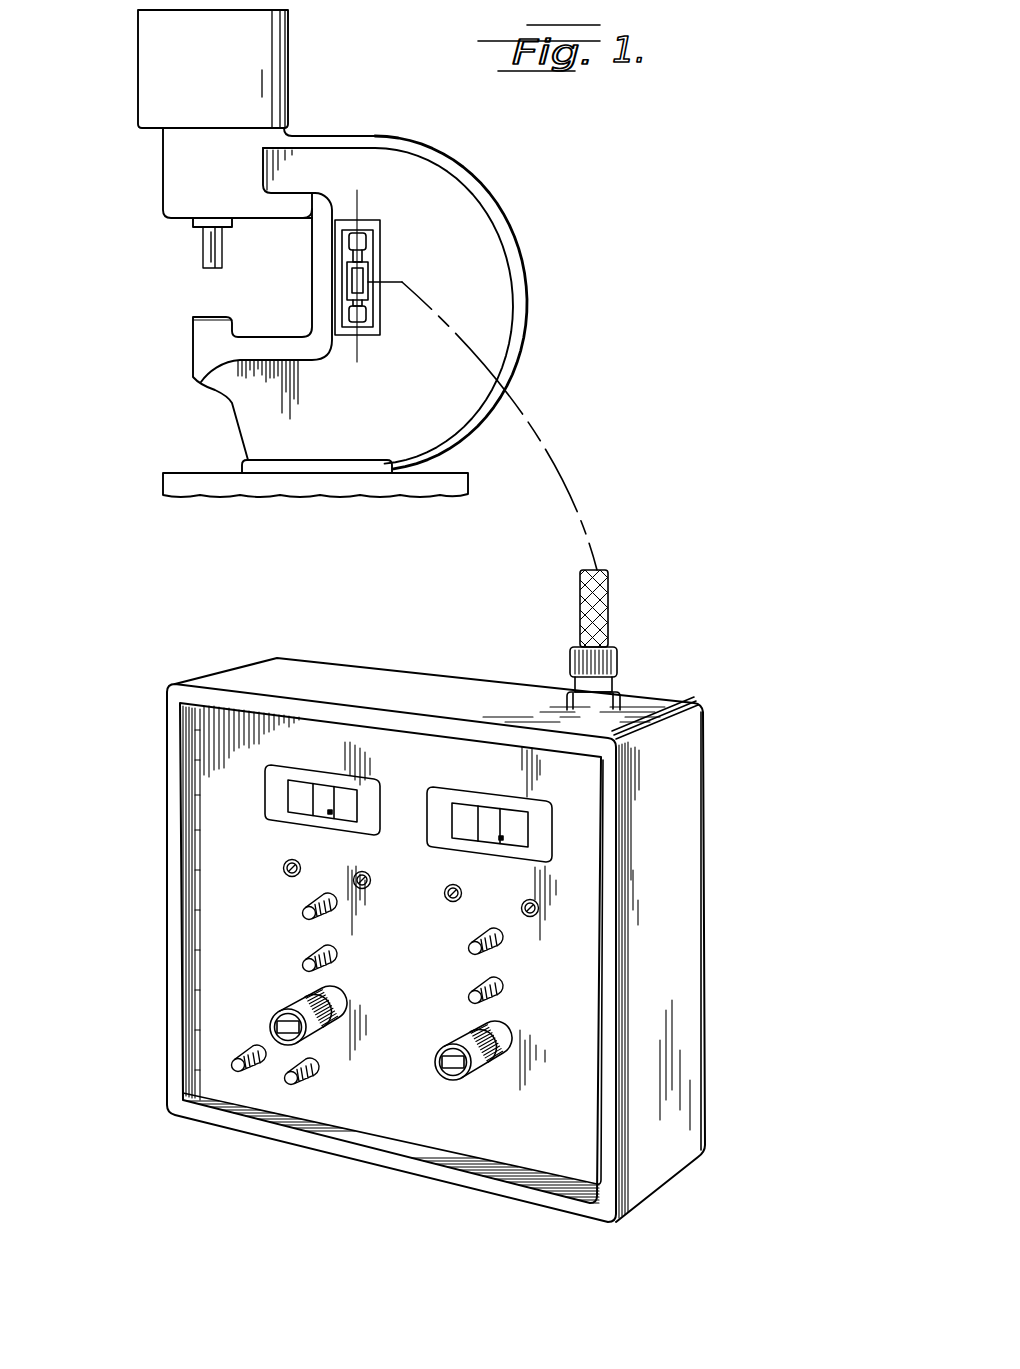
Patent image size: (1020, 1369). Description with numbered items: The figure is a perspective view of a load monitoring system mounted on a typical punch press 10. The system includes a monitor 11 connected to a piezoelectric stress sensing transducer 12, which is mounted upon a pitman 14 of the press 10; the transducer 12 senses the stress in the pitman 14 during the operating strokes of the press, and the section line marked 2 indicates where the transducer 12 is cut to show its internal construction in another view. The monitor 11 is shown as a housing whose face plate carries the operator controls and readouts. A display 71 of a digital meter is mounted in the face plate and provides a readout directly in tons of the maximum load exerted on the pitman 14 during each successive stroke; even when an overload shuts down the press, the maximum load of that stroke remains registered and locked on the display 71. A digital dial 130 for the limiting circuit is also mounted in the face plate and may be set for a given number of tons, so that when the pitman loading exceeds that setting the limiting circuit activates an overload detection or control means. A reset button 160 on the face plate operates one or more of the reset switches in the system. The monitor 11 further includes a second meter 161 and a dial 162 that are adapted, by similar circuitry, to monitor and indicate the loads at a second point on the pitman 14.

The punch press 10 is at (148, 193).
The monitor 11 is at (258, 676).
The piezoelectric stress sensing transducer 12 is at (383, 263).
The pitman 14 is at (313, 270).
The section line of FIG. 2 is at (332, 353).
The display 71 is at (292, 812).
The second meter 161 is at (510, 812).
The digital dial 130 is at (271, 1024).
The dial 162 is at (452, 1079).
The reset button 160 is at (232, 1062).